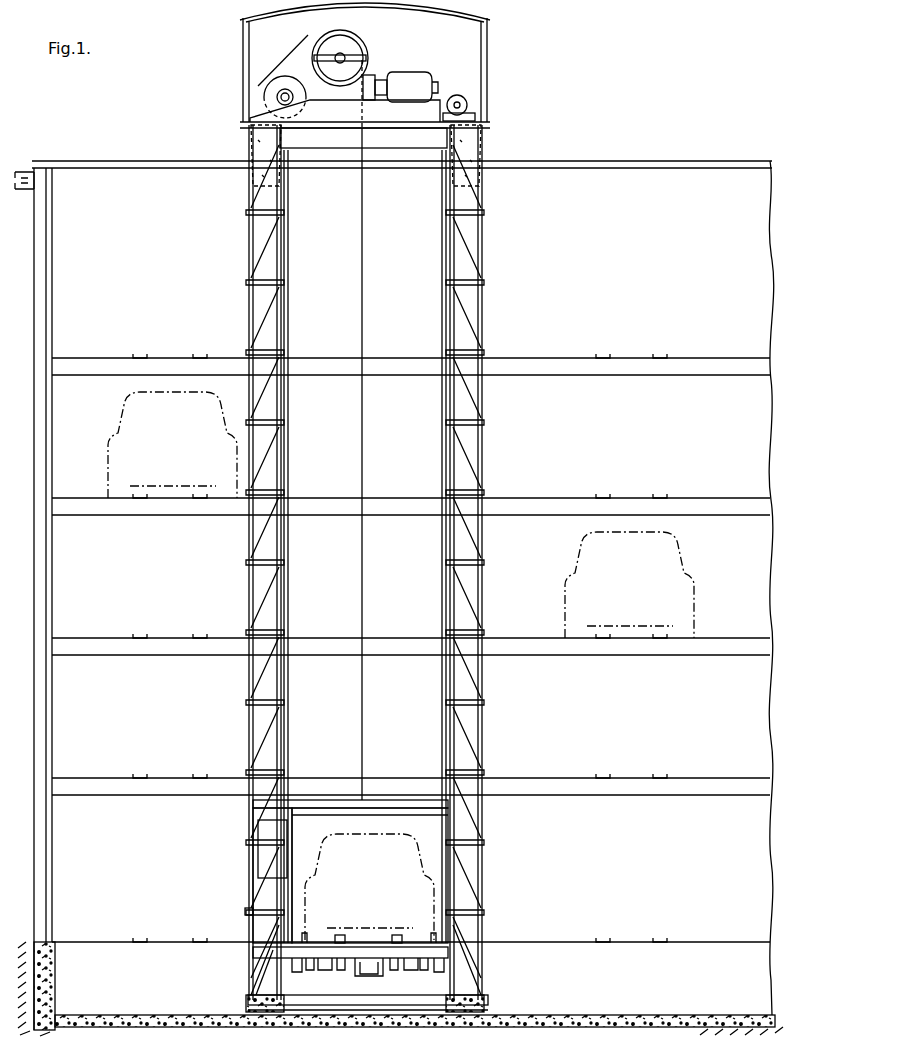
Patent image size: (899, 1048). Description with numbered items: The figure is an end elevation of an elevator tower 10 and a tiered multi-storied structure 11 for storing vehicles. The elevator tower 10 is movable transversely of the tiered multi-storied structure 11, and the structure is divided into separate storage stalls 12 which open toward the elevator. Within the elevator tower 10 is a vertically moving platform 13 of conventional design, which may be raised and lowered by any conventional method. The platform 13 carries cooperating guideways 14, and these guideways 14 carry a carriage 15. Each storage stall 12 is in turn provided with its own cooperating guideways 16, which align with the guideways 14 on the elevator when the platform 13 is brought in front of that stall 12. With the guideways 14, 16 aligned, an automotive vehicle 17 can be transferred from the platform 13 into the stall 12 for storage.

The elevator tower 10 is at (484, 444).
The tiered multi-storied structure 11 is at (46, 294).
The storage stall 12 is at (411, 623).
The vertically moving platform 13 is at (326, 962).
The guideways 14 is at (383, 935).
The carriage 15 is at (400, 934).
The guideways 16 is at (400, 659).
The automotive vehicle 17 is at (118, 436).